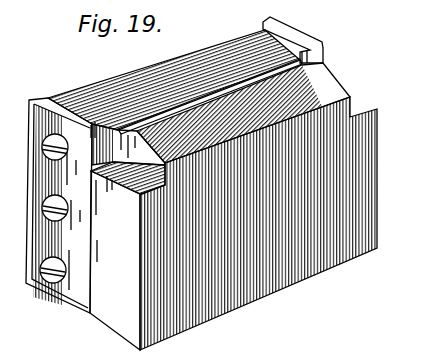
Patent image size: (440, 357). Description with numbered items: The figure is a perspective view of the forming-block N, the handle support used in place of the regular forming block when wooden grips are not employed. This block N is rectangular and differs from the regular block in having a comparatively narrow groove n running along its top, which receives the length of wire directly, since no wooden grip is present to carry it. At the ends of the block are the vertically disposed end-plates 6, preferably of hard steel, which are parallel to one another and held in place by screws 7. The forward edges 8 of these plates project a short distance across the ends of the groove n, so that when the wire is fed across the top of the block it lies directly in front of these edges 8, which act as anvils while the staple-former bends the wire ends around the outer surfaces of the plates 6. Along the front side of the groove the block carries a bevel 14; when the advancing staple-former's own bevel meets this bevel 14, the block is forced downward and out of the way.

The end-plates 6 is at (30, 126).
The screws 7 is at (52, 157).
The edges 8 is at (97, 123).
The groove n is at (147, 110).
The bevel 14 is at (330, 87).
The forming-block N is at (315, 248).